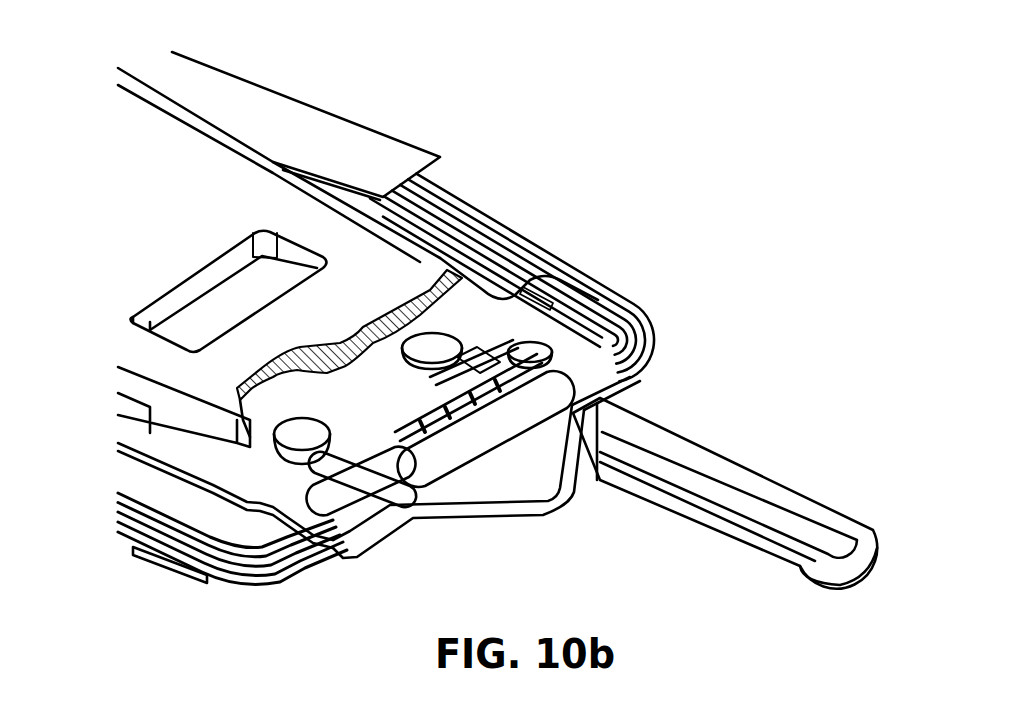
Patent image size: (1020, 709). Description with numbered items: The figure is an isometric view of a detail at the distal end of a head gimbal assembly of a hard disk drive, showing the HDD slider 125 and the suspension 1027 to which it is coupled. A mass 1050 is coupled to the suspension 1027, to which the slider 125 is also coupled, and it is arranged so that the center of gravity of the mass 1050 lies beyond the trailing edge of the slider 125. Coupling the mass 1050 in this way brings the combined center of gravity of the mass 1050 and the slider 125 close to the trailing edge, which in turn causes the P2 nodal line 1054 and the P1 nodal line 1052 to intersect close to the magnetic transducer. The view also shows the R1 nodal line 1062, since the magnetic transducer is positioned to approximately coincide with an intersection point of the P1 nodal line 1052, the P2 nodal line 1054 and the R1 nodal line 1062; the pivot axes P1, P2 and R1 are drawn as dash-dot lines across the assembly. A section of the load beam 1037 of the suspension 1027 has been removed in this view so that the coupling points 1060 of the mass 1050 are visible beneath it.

The suspension 1027 is at (722, 371).
The load beam 1037 is at (267, 203).
The mass 1050 is at (472, 450).
The P1 nodal line 1052 is at (547, 330).
The P2 nodal line 1054 is at (612, 297).
The coupling points 1060 is at (307, 433).
The R1 nodal line 1062 is at (583, 507).
The HDD slider 125 is at (203, 442).
The P1 nodal line P1 is at (423, 406).
The P2 nodal line P2 is at (290, 462).
The R1 nodal line R1 is at (187, 262).